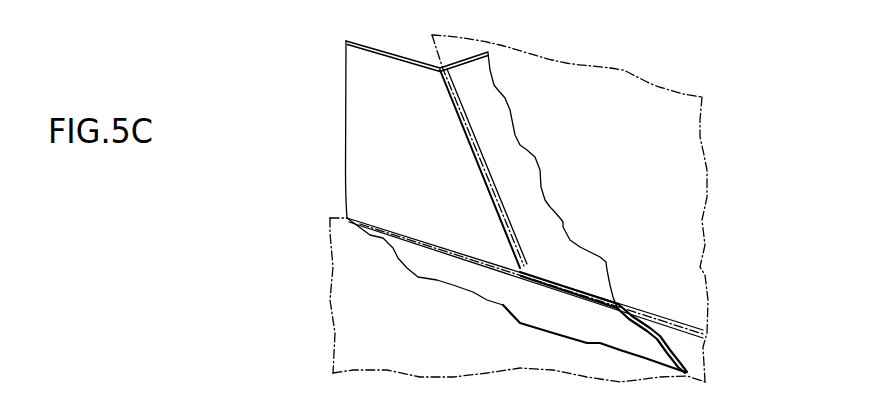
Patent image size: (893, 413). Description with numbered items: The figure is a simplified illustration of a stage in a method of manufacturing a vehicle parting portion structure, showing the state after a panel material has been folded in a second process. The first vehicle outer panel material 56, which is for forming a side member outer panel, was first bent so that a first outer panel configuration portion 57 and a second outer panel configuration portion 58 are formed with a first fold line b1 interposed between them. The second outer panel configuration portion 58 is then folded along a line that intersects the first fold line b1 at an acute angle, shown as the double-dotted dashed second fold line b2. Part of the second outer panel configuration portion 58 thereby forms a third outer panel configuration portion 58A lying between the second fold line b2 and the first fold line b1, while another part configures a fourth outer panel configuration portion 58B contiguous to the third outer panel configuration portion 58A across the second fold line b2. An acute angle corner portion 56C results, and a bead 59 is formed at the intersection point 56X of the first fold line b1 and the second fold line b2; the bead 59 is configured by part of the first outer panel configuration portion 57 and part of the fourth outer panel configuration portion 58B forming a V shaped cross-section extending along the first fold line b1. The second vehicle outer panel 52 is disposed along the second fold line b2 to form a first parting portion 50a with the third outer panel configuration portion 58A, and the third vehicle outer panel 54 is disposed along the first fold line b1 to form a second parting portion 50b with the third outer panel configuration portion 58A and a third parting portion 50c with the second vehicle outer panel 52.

The first parting portion 50a is at (449, 122).
The second parting portion 50b is at (381, 217).
The third parting portion 50c is at (661, 310).
The second vehicle outer panel 52 is at (692, 112).
The third vehicle outer panel 54 is at (697, 361).
The first vehicle outer panel material 56 is at (288, 68).
The acute angle corner portion 56C is at (529, 260).
The intersection point 56X is at (506, 296).
The first outer panel configuration portion 57 is at (448, 268).
The second outer panel configuration portion 58 is at (436, 174).
The third outer panel configuration portion 58A is at (361, 177).
The fourth outer panel configuration portion 58B is at (504, 118).
The bead 59 is at (507, 308).
The first fold line b1 is at (393, 243).
The second fold line b2 is at (474, 162).